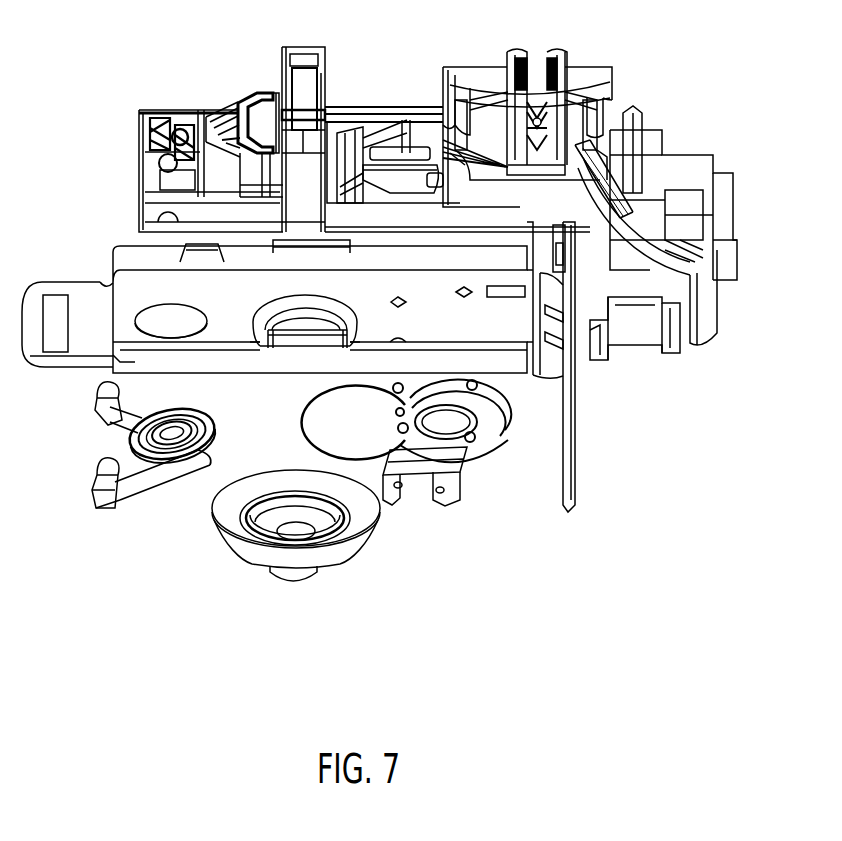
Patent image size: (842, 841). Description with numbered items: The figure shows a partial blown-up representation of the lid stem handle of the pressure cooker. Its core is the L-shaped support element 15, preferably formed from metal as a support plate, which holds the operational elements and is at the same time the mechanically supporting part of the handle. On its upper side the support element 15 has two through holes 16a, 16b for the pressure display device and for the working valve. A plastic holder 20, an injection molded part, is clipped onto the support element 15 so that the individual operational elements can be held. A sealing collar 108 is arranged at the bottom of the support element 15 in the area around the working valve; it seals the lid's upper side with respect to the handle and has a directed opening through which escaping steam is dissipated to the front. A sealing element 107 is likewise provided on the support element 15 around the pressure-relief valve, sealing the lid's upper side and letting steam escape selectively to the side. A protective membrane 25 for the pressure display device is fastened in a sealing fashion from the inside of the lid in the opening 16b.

The plastic holder 20 is at (135, 113).
The L-shaped support element 15 is at (85, 297).
The through hole 16a is at (180, 335).
The through hole 16b is at (313, 340).
The sealing collar 108 is at (92, 505).
The sealing element 107 is at (438, 501).
The protective membrane 25 is at (372, 545).